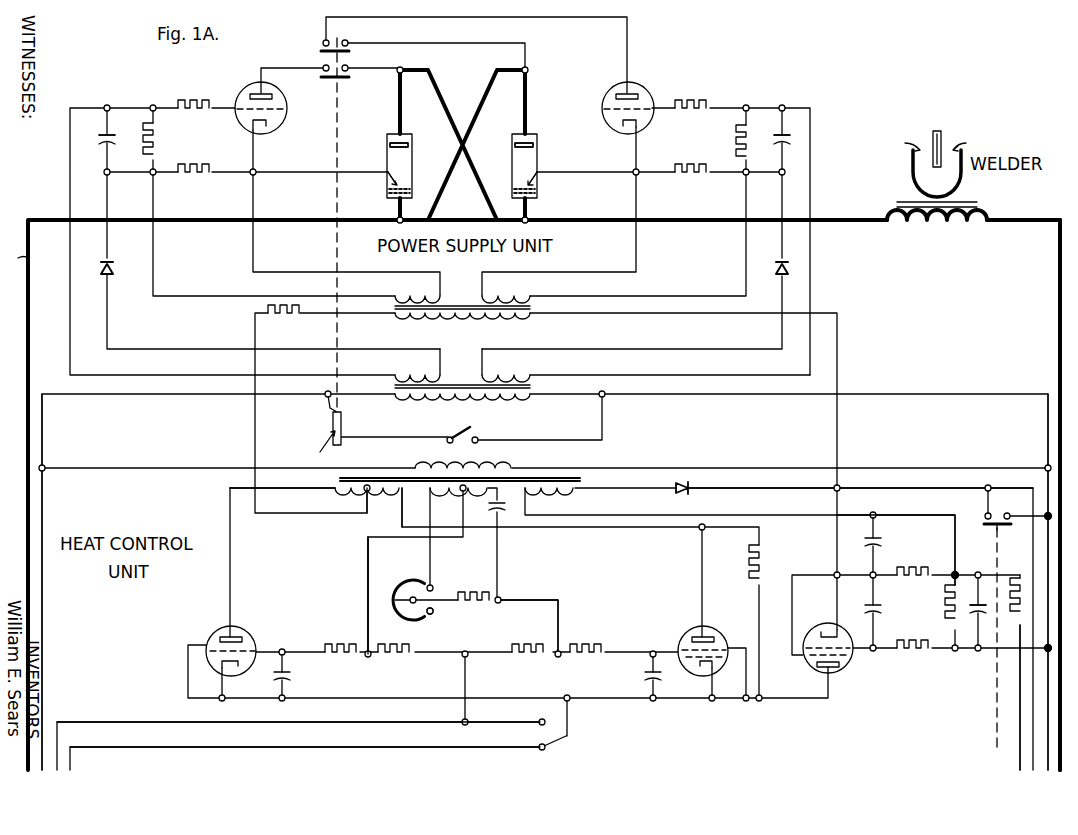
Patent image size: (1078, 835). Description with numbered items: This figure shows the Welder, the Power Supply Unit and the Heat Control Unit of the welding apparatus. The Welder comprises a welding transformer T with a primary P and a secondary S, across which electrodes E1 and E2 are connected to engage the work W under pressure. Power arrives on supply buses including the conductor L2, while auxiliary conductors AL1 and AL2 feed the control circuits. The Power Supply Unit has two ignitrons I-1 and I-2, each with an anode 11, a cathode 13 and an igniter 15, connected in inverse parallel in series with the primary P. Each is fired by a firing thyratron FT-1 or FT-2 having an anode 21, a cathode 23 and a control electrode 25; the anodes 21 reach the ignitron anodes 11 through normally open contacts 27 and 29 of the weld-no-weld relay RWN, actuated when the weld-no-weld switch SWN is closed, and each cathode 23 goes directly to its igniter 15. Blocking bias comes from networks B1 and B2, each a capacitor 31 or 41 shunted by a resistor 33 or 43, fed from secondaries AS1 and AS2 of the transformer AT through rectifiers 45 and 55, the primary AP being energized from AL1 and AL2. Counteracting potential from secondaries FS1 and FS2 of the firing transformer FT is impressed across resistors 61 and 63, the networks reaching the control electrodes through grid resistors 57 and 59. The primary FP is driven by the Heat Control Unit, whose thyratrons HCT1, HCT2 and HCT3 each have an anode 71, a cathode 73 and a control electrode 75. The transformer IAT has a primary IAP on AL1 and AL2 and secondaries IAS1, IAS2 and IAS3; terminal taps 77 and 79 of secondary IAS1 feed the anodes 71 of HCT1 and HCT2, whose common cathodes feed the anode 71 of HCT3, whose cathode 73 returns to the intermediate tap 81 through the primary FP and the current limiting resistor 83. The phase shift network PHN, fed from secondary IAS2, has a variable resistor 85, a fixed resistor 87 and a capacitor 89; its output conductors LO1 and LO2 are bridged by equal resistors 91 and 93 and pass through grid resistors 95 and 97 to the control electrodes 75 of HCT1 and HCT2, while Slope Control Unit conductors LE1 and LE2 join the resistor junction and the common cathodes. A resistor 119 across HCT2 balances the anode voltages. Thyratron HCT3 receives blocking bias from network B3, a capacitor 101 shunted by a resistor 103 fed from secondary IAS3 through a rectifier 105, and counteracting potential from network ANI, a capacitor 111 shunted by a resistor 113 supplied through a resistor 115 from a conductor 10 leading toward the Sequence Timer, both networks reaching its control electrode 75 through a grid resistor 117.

The normally open contact 29 is at (339, 33).
The normally open contact 27 is at (350, 78).
The firing thyratron FT-1 is at (250, 95).
The firing thyratron FT-2 is at (636, 90).
The anode 21 is at (640, 97).
The control electrode 25 is at (609, 108).
The cathode 23 is at (618, 124).
The grid resistor 57 is at (209, 98).
The resistor 61 is at (186, 178).
The resistor 33 is at (156, 140).
The capacitor 31 is at (100, 136).
The biasing network B1 is at (118, 126).
The rectifier 45 is at (112, 262).
The ignitron I-1 is at (412, 165).
The ignitron I-2 is at (537, 165).
The anode 11 is at (541, 138).
The igniter 15 is at (543, 184).
The cathode 13 is at (543, 195).
The grid resistor 59 is at (685, 99).
The resistor 63 is at (700, 154).
The resistor 43 is at (735, 143).
The capacitor 41 is at (787, 138).
The biasing network B2 is at (771, 126).
The rectifier 55 is at (777, 263).
The conductor L2 is at (1058, 290).
The work W is at (937, 130).
The secondary S is at (912, 183).
The electrode E1 is at (902, 141).
The electrode E2 is at (965, 141).
The welding transformer T is at (1003, 213).
The primary P is at (937, 231).
The secondary FS1 is at (410, 285).
The secondary FS2 is at (510, 285).
The firing transformer FT is at (475, 305).
The primary FP is at (504, 319).
The current limiting resistor 83 is at (273, 316).
The secondary AS1 is at (425, 375).
The secondary AS2 is at (510, 366).
The transformer AT is at (475, 386).
The primary AP is at (480, 399).
The auxiliary bus AL1 is at (43, 422).
The auxiliary bus AL2 is at (1046, 428).
The weld-no-weld relay RWN is at (342, 427).
The weld-no-weld switch SWN is at (462, 432).
The primary IAP is at (478, 458).
The transformer IAT is at (475, 484).
The secondary IAS1 is at (386, 482).
The secondary IAS2 is at (455, 494).
The secondary IAS3 is at (572, 496).
The terminal tap 77 is at (332, 488).
The intermediate tap 81 is at (360, 494).
The terminal tap 79 is at (399, 495).
The capacitor 89 is at (489, 508).
The rectifier 105 is at (696, 479).
The output conductor LO2 is at (537, 602).
The output conductor LO1 is at (369, 548).
The thyratron HCT1 is at (245, 632).
The thyratron HCT2 is at (692, 636).
The thyratron HCT3 is at (852, 664).
The anode 71 is at (816, 672).
The control electrode 75 is at (852, 652).
The cathode 73 is at (822, 630).
The grid resistor 95 is at (354, 643).
The resistor 91 is at (402, 643).
The resistor 93 is at (545, 643).
The second grid resistor 97 is at (578, 643).
The output conductor LE1 is at (365, 720).
The output conductor LE2 is at (373, 745).
The phase shift network PHN is at (431, 584).
The variable resistor 85 is at (427, 614).
The fixed resistor 87 is at (486, 590).
The resistor 119 is at (762, 562).
The capacitor 101 is at (866, 540).
The biasing network B3 is at (896, 550).
The resistor 103 is at (910, 568).
The resistor 113 is at (945, 607).
The grid resistor 117 is at (910, 638).
The counteracting network ANI is at (966, 596).
The capacitor 111 is at (973, 623).
The resistor 115 is at (1028, 600).
The conductor 10 is at (1020, 730).